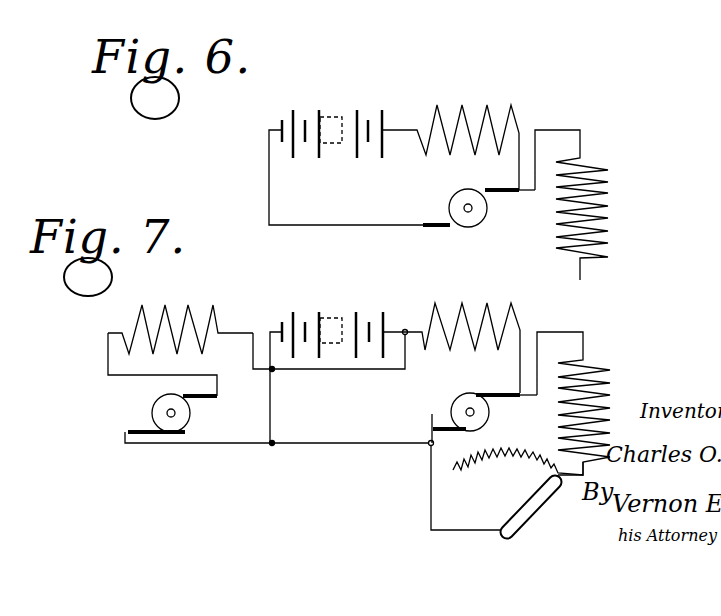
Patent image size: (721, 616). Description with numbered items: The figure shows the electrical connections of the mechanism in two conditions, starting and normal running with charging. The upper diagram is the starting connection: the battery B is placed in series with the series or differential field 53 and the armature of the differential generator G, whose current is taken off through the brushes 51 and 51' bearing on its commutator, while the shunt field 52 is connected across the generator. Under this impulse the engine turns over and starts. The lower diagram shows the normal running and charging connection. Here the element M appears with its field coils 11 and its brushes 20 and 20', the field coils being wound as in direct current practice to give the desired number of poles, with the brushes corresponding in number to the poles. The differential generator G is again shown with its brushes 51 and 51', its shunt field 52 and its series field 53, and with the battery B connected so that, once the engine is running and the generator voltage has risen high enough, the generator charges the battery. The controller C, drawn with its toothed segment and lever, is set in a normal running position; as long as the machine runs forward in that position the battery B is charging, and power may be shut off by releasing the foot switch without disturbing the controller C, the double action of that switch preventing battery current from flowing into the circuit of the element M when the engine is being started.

In FIG. 6, the battery B is at (360, 100).
In FIG. 7, the battery B is at (342, 318).
In FIG. 6, the series or differential field 53 is at (511, 105).
In FIG. 7, the series or differential field 53 is at (486, 303).
In FIG. 6, the shunt field 52 is at (600, 225).
In FIG. 7, the shunt field 52 is at (592, 403).
In FIG. 6, the brush 51 is at (510, 206).
In FIG. 7, the brush 51 is at (506, 380).
In FIG. 6, the brush 51' is at (428, 239).
In FIG. 7, the brush 51' is at (429, 422).
In FIG. 6, the differential generator G is at (478, 222).
In FIG. 7, the differential generator G is at (459, 396).
In FIG. 7, the field coils 11 is at (193, 315).
In FIG. 7, the brushes 20 is at (217, 408).
In FIG. 7, the brush 20' is at (147, 414).
In FIG. 7, the electrical element M is at (186, 424).
In FIG. 7, the controller C is at (530, 472).